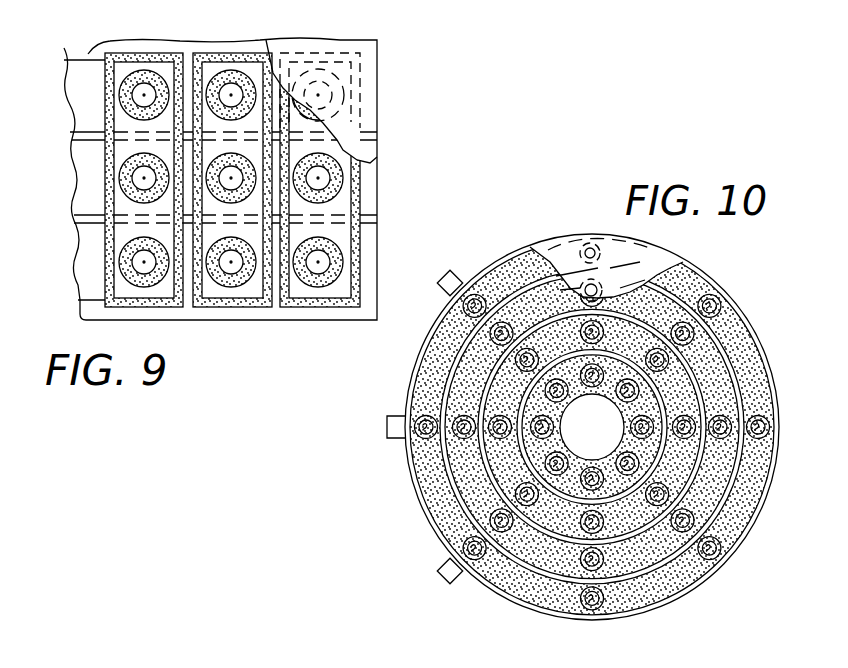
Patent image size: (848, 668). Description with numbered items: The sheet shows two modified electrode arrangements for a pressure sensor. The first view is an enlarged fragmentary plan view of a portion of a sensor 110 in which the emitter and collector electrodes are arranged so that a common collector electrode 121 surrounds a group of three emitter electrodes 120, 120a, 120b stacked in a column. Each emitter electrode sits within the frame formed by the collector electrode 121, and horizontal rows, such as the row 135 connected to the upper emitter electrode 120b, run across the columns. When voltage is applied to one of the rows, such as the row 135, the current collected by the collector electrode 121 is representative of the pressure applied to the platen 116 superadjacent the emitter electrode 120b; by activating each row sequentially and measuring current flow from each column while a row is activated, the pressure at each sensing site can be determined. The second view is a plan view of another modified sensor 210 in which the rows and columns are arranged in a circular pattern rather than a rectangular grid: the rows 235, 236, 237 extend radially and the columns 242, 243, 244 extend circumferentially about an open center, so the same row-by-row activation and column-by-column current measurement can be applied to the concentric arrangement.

In FIG. 9, the row 135 is at (207, 157).
In FIG. 9, the emitter electrode 120b is at (230, 72).
In FIG. 9, the platen 116 is at (342, 108).
In FIG. 9, the sensor 110 is at (385, 187).
In FIG. 9, the emitter electrode 120a is at (252, 193).
In FIG. 9, the collector electrode 121 is at (211, 305).
In FIG. 9, the emitter electrode 120 is at (245, 285).
In FIG. 10, the sensor 210 is at (404, 485).
In FIG. 10, the row 235 is at (454, 270).
In FIG. 10, the row 236 is at (387, 428).
In FIG. 10, the row 237 is at (440, 573).
In FIG. 10, the column 242 is at (505, 572).
In FIG. 10, the column 243 is at (553, 560).
In FIG. 10, the column 244 is at (630, 513).